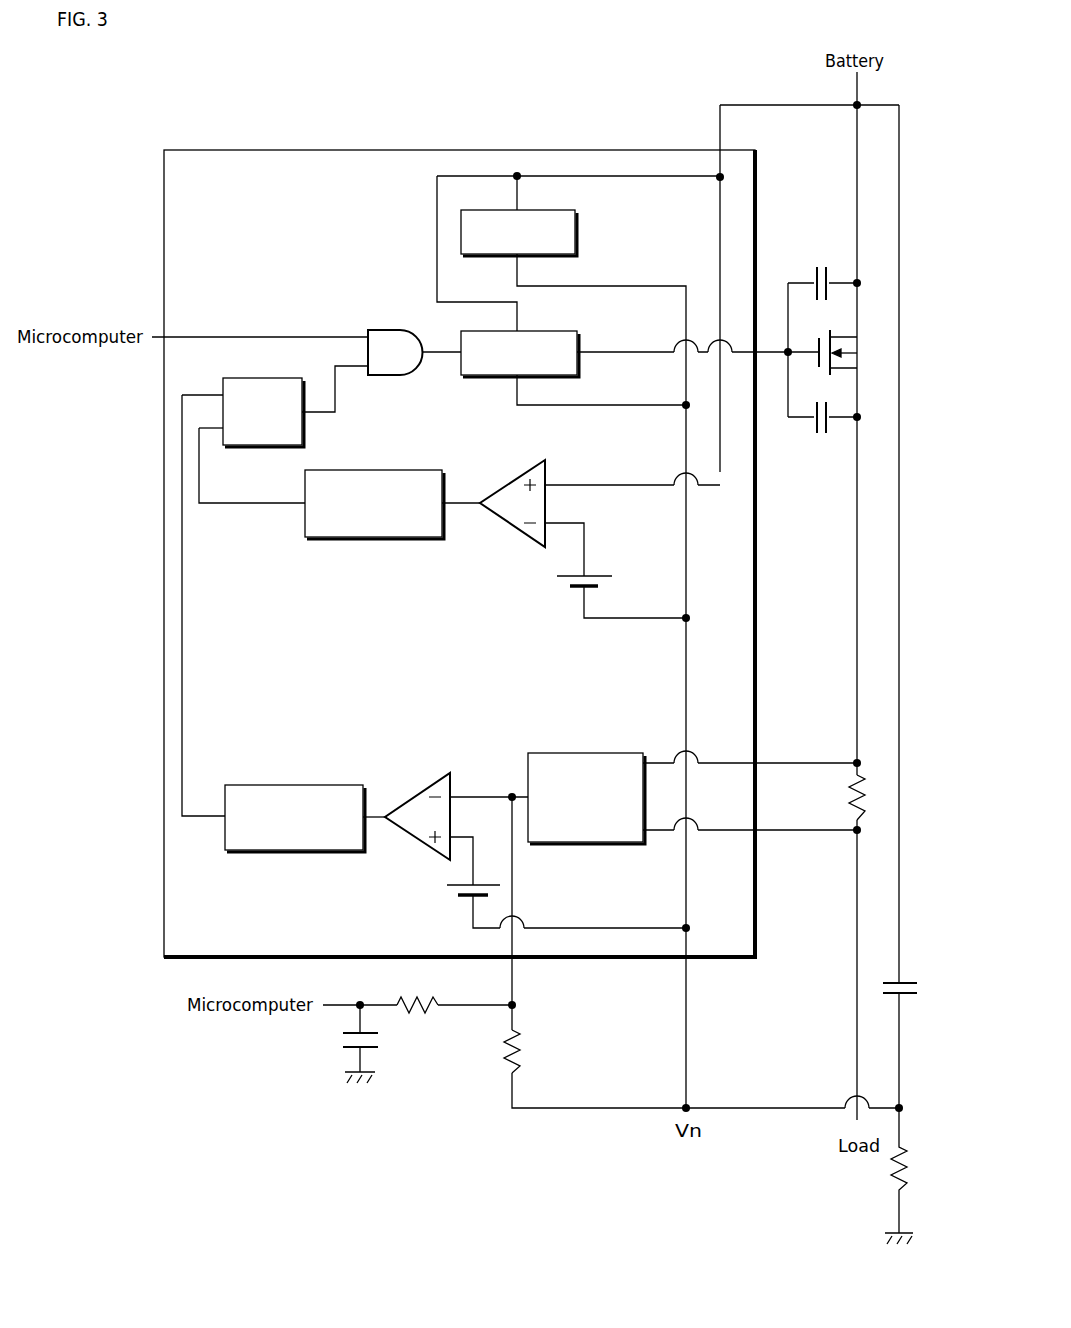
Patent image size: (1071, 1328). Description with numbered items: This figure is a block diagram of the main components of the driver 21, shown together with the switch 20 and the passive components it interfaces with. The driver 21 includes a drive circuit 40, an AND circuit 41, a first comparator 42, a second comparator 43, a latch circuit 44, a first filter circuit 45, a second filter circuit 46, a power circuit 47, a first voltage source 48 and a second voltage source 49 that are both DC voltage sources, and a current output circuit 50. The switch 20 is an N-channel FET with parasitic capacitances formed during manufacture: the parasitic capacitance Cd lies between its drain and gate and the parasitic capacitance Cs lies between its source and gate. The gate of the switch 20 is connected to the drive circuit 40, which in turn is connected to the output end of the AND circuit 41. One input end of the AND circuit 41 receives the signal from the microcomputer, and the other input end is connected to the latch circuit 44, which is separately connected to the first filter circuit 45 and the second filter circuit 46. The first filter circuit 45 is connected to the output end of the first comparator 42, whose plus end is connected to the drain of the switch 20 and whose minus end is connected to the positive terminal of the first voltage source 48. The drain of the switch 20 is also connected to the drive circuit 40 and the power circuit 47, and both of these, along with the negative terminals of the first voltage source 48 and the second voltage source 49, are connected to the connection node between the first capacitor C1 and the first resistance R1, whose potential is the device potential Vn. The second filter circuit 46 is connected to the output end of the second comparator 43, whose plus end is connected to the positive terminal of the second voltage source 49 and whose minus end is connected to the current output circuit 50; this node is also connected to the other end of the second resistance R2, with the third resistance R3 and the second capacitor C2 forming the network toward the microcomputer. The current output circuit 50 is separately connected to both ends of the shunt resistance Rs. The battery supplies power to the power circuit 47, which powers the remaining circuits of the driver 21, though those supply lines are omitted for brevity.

The driver 21 is at (263, 150).
The power circuit 47 is at (578, 210).
The drive circuit 40 is at (578, 331).
The AND circuit 41 is at (390, 330).
The latch circuit 44 is at (240, 378).
The first filter circuit 45 is at (368, 470).
The first comparator 42 is at (510, 482).
The first voltage source 48 is at (555, 585).
The second filter circuit 46 is at (280, 785).
The second comparator 43 is at (415, 797).
The second voltage source 49 is at (437, 893).
The current output circuit 50 is at (550, 753).
The switch 20 is at (855, 337).
The parasitic capacitance Cd is at (822, 265).
The parasitic capacitance Cs is at (820, 440).
The shunt resistance Rs is at (848, 790).
The first capacitor C1 is at (910, 970).
The second capacitor C2 is at (388, 1040).
The first resistance R1 is at (883, 1165).
The second resistance R2 is at (495, 1050).
The third resistance R3 is at (420, 993).